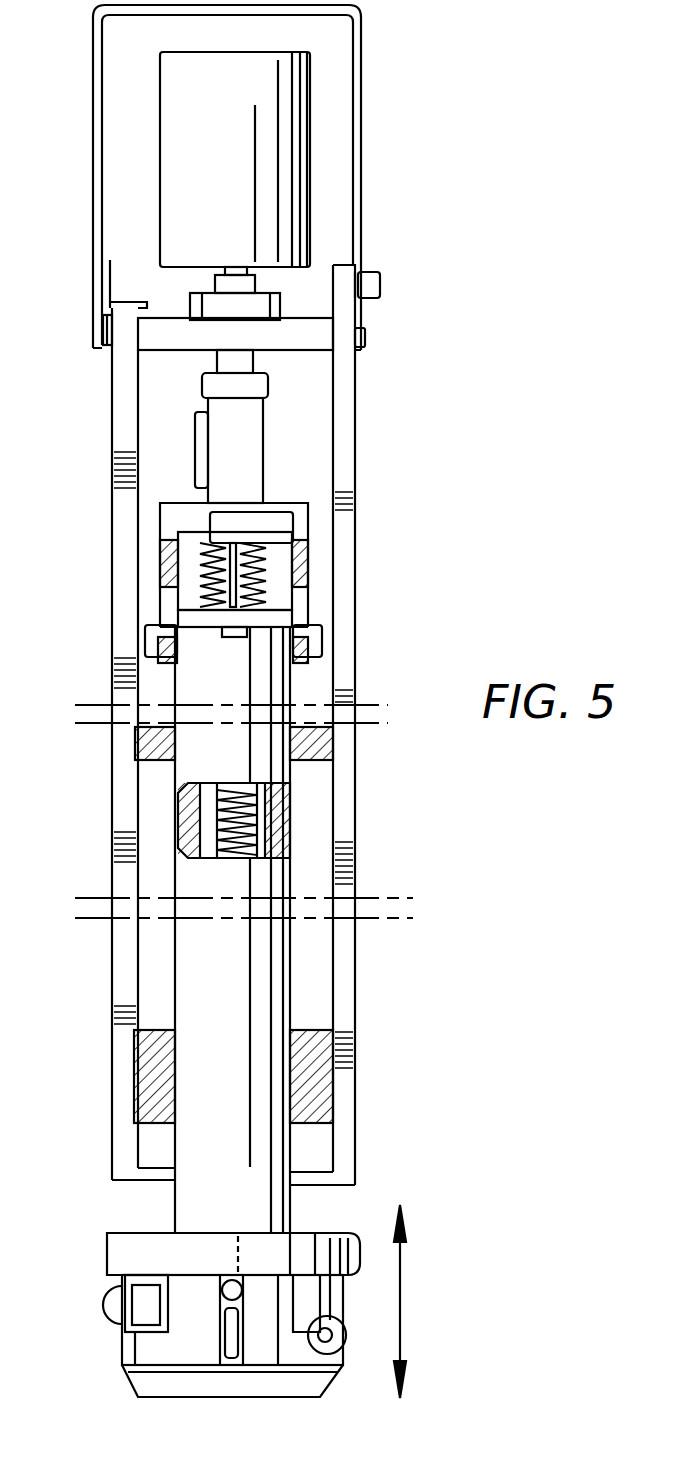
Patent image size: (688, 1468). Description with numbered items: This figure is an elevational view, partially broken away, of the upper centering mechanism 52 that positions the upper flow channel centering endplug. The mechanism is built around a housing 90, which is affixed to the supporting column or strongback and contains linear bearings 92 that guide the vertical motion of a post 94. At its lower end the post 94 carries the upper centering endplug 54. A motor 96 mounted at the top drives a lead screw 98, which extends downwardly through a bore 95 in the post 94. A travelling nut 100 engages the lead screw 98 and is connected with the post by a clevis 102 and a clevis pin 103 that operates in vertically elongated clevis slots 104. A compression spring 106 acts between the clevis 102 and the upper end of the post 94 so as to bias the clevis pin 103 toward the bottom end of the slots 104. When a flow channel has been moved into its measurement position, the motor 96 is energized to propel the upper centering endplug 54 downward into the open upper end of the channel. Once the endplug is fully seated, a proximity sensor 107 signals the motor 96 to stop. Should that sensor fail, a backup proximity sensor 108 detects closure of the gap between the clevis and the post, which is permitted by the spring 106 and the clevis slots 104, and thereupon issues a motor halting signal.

The upper centering mechanism 52 is at (404, 342).
The upper centering endplug 54 is at (333, 1297).
The housing 90 is at (353, 893).
The linear bearings 92 is at (322, 748).
The post 94 is at (188, 968).
The bore 95 is at (290, 822).
The motor 96 is at (228, 171).
The lead screw 98 is at (178, 827).
The travelling nut 100 is at (247, 463).
The clevis 102 is at (302, 540).
The clevis pin 103 is at (322, 642).
The clevis slots 104 is at (300, 597).
The compression spring 106 is at (197, 580).
The proximity sensor 107 is at (227, 1291).
The backup proximity sensor 108 is at (277, 522).